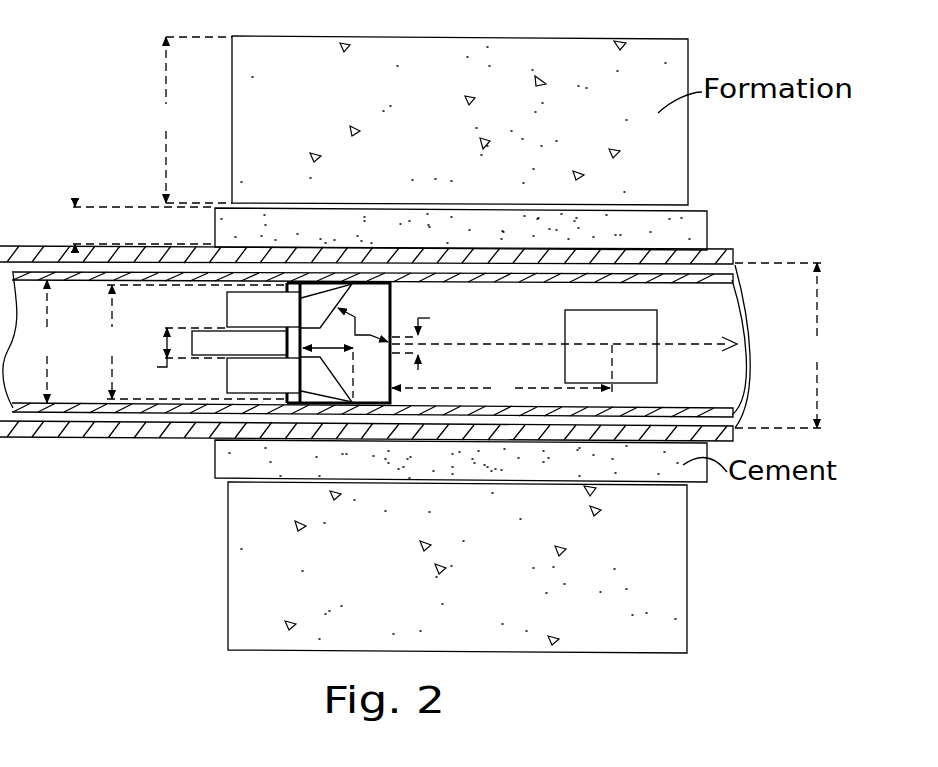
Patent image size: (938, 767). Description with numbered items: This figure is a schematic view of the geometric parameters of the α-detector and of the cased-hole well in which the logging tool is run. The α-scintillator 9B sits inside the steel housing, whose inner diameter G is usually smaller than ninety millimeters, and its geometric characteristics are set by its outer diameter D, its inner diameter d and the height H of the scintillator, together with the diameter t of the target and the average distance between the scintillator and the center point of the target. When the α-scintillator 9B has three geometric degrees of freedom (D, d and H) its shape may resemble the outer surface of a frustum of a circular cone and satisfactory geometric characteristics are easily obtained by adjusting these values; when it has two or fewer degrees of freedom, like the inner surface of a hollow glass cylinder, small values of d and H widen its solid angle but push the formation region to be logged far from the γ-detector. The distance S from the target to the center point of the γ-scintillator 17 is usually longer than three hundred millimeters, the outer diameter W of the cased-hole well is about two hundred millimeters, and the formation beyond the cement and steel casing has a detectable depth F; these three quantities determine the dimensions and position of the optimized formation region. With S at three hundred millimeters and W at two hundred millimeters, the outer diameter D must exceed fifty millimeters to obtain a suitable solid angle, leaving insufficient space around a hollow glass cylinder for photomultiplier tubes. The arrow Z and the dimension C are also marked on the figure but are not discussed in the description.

The α-scintillator 9B is at (337, 386).
The γ-scintillator 17 is at (611, 346).
The detectable depth of formation region F is at (194, 120).
The cement thickness C is at (140, 225).
The inner diameter of steel housing G is at (48, 341).
The outer diameter of α-scintillator D is at (195, 342).
The inner diameter of α-scintillator d is at (184, 354).
The height of scintillator H is at (333, 357).
The diameter of target t is at (416, 338).
The distance from target to γ-scintillator center S is at (502, 374).
The gun axis direction Z is at (564, 361).
The outer diameter of cased-hole well W is at (783, 345).